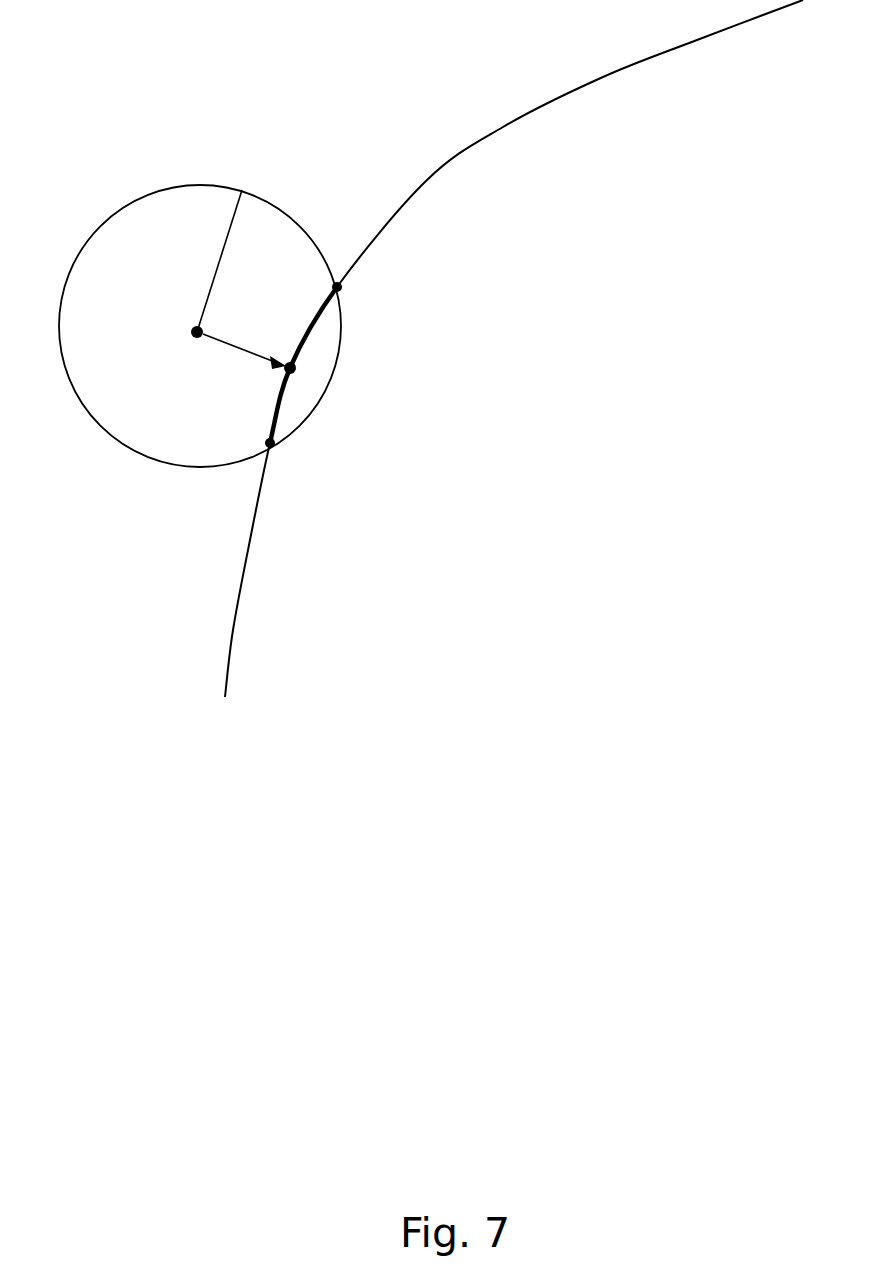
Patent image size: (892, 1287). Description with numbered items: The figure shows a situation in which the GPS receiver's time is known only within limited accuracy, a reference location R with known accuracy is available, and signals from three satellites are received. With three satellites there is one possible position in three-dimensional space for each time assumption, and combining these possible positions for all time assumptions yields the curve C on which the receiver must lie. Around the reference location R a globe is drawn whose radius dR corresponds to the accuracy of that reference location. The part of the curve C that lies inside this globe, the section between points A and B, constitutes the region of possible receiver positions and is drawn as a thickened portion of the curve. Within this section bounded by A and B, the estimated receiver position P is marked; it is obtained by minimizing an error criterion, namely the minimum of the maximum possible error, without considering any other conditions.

The curve C is at (602, 78).
The reference location R is at (200, 326).
The radius dR is at (212, 261).
The section endpoint A is at (350, 289).
The section endpoint B is at (278, 454).
The receiver position P is at (299, 377).